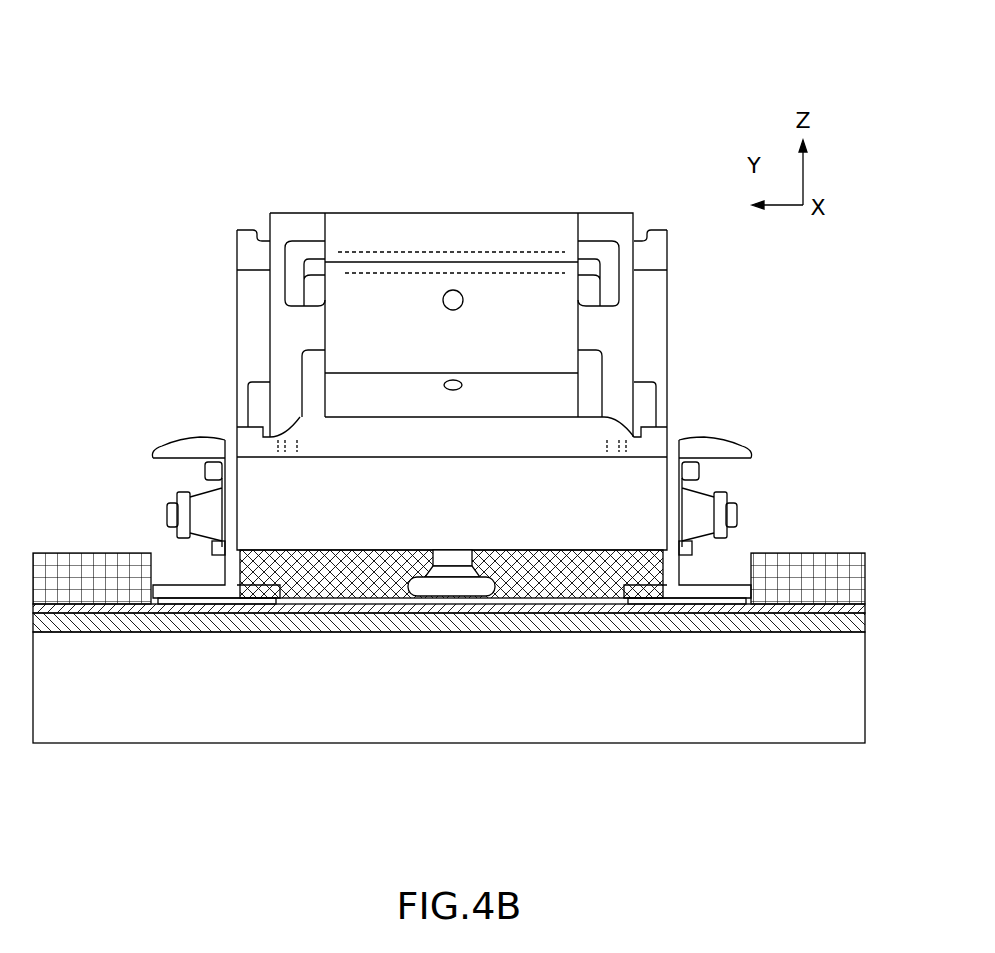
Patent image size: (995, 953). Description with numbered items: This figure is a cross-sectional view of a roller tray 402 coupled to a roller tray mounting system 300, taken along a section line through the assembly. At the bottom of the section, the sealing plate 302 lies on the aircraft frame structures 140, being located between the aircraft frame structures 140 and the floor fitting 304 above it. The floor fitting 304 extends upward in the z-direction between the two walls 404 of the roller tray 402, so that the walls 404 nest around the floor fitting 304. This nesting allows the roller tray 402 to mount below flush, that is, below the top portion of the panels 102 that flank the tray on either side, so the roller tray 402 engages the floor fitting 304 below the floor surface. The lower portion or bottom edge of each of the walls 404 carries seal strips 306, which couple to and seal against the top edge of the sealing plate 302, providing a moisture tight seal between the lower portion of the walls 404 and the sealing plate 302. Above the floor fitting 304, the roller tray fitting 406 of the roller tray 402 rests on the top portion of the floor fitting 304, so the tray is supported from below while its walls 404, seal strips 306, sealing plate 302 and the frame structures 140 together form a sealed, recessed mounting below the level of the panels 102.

The roller tray mounting system 300 is at (654, 128).
The roller tray 402 is at (129, 216).
The walls 404 is at (224, 448).
The roller tray fitting 406 is at (625, 480).
The floor fitting 304 is at (375, 578).
The seal strips 306 is at (203, 602).
The sealing plate 302 is at (548, 608).
The aircraft frame structures 140 is at (655, 625).
The panels 102 is at (68, 588).